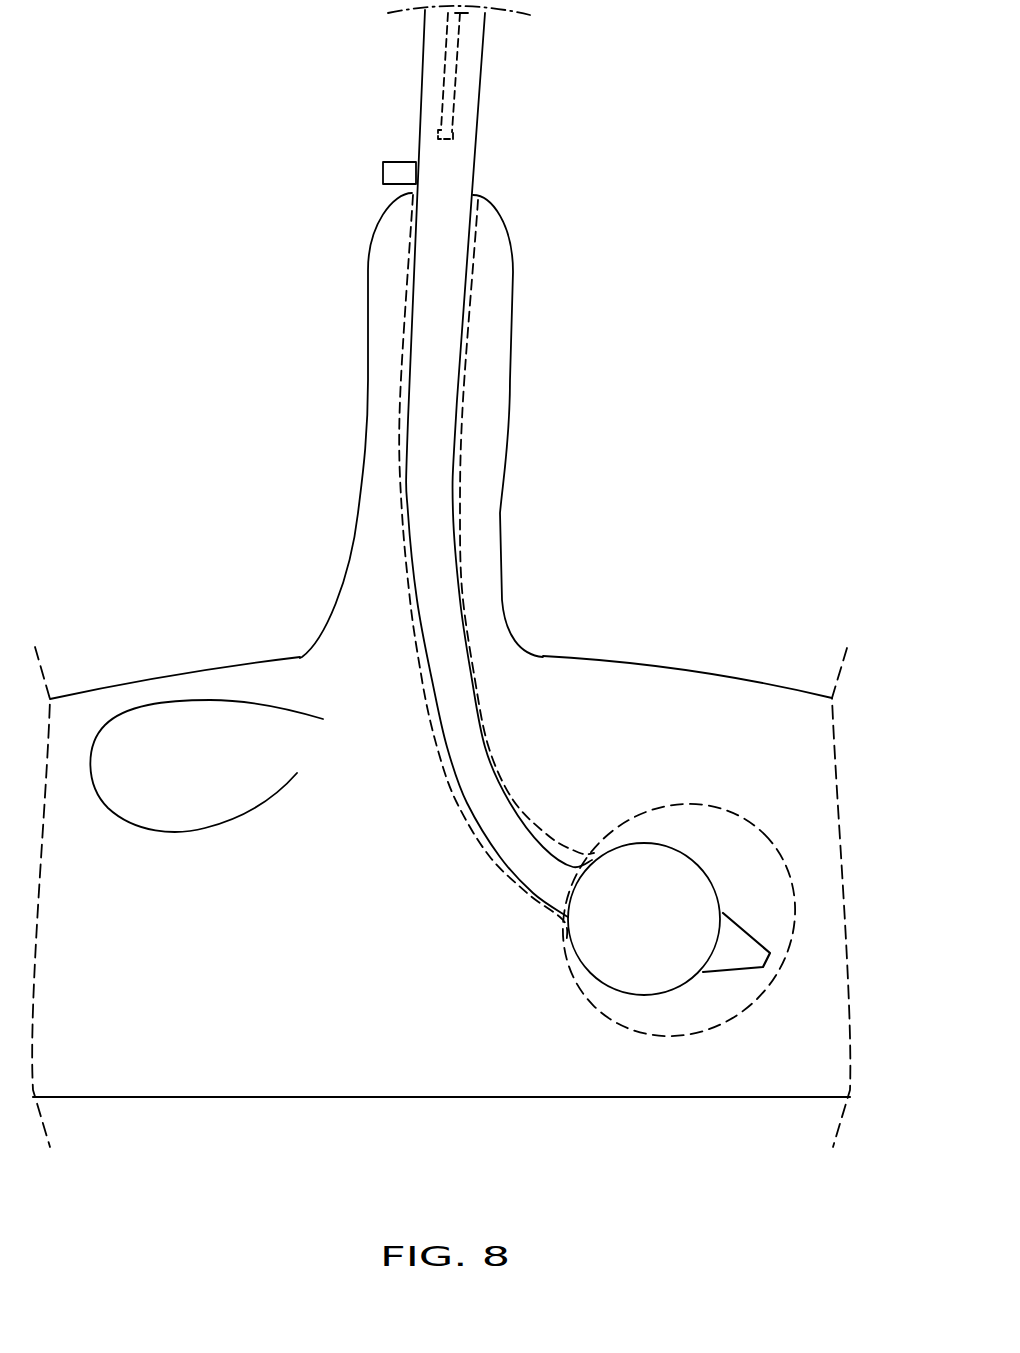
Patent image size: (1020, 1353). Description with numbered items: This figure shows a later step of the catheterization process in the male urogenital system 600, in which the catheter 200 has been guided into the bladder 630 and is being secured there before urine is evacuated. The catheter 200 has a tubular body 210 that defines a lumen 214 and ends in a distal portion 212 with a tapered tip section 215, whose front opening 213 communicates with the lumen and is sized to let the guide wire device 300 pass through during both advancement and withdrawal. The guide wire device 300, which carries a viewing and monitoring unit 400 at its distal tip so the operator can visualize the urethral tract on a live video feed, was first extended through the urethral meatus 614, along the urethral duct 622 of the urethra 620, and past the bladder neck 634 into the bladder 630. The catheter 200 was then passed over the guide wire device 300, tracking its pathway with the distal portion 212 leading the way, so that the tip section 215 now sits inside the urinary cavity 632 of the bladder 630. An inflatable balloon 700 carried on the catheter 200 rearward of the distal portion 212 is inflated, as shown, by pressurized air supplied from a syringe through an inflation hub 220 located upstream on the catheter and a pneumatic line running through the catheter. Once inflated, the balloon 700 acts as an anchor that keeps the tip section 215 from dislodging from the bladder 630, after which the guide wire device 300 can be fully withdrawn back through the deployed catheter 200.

The catheter 200 is at (503, 463).
The body 210 is at (437, 440).
The distal portion 212 is at (768, 925).
The opening 213 is at (777, 963).
The lumen 214 is at (443, 387).
The tip section 215 is at (727, 983).
The inflation hub 220 is at (377, 176).
The guide wire device 300 is at (460, 77).
The viewing and monitoring unit 400 is at (435, 133).
The male urogenital system 600 is at (215, 358).
The urethral meatus 614 is at (480, 195).
The urethra 620 is at (477, 318).
The urethral duct 622 is at (408, 508).
The bladder 630 is at (645, 1043).
The urinary cavity 632 is at (744, 838).
The bladder neck 634 is at (548, 927).
The inflatable balloon 700 is at (657, 840).